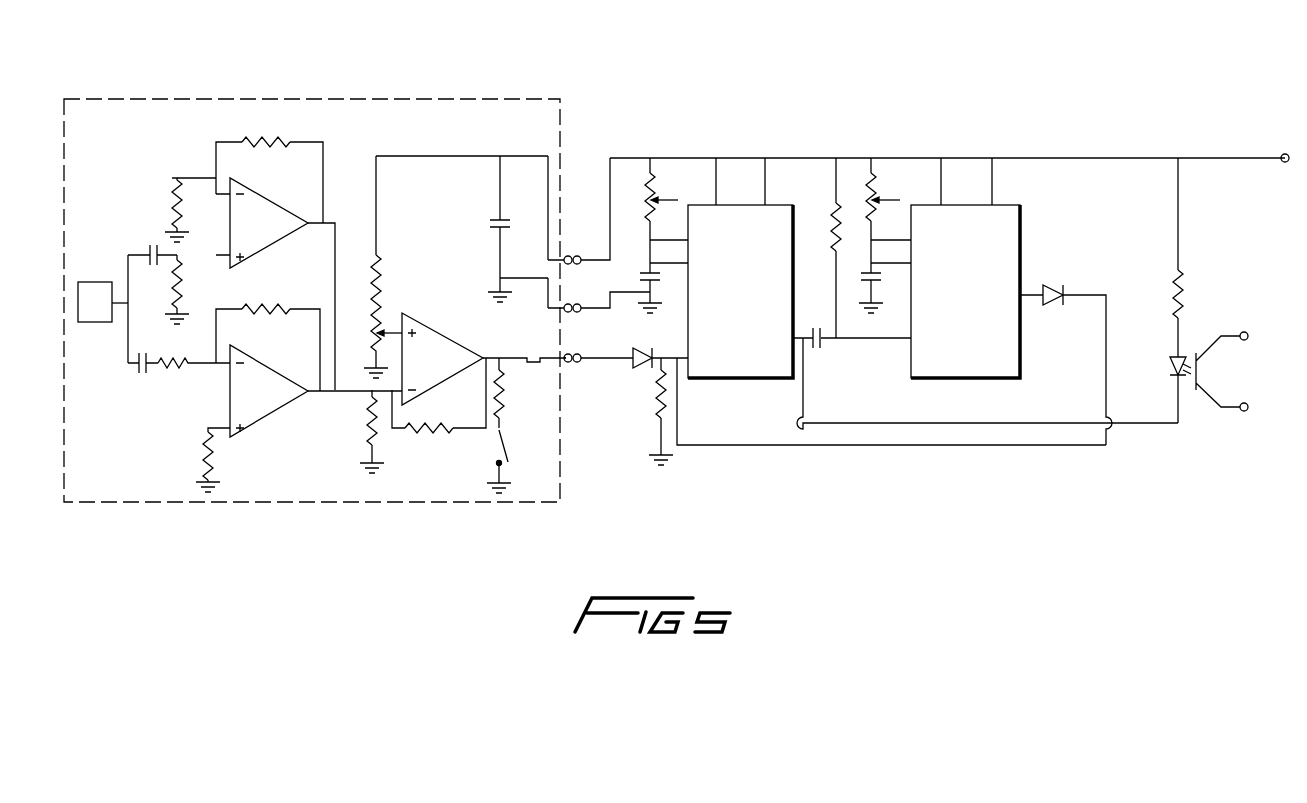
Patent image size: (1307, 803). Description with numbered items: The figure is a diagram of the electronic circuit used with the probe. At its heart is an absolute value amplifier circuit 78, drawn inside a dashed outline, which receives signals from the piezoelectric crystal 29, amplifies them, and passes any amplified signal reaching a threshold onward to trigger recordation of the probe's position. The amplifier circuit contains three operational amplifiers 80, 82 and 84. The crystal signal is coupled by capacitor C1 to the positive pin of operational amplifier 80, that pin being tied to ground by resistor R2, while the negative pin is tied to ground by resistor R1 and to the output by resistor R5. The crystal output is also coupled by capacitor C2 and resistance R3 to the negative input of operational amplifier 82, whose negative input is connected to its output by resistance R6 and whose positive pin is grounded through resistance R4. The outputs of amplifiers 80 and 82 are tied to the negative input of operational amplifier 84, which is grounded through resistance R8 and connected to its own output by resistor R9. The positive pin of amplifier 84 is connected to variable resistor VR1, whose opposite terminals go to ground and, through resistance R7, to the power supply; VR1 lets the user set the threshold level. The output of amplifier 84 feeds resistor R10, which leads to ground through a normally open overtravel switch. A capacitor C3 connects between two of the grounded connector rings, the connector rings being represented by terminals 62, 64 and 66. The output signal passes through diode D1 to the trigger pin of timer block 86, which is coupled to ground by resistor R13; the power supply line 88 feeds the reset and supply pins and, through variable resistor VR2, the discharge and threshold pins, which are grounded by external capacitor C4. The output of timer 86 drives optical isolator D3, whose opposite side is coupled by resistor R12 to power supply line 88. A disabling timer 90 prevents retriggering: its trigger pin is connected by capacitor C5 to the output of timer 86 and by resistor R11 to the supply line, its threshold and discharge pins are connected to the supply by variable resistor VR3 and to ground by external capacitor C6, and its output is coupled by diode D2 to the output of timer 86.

The piezoelectric crystal 29 is at (106, 313).
The terminal 62 is at (567, 254).
The terminal 64 is at (567, 302).
The terminal 66 is at (567, 352).
The absolute value amplifier circuit 78 is at (383, 503).
The operational amplifier 80 is at (274, 233).
The operational amplifier 82 is at (274, 400).
The operational amplifier 84 is at (442, 368).
The timer block 86 is at (751, 320).
The power supply line 88 is at (816, 158).
The disabling timer 90 is at (975, 303).
The resistor R1 is at (179, 210).
The resistor R2 is at (166, 289).
The resistance R3 is at (178, 377).
The resistance R4 is at (199, 460).
The resistor R5 is at (269, 169).
The resistance R6 is at (268, 337).
The resistance R7 is at (459, 262).
The resistance R8 is at (356, 431).
The resistor R9 is at (439, 408).
The resistor R10 is at (514, 425).
The resistor R11 is at (819, 248).
The resistor R12 is at (1161, 257).
The resistor R13 is at (647, 411).
The variable resistor VR1 is at (371, 354).
The variable resistor VR2 is at (668, 215).
The variable resistor VR3 is at (889, 215).
The capacitor C1 is at (152, 245).
The capacitor C2 is at (143, 374).
The capacitor C3 is at (500, 229).
The external capacitor C4 is at (638, 291).
The capacitor C5 is at (987, 378).
The external capacitor C6 is at (860, 291).
The diode D1 is at (659, 348).
The diode D2 is at (1076, 355).
The optical isolator D3 is at (1192, 377).